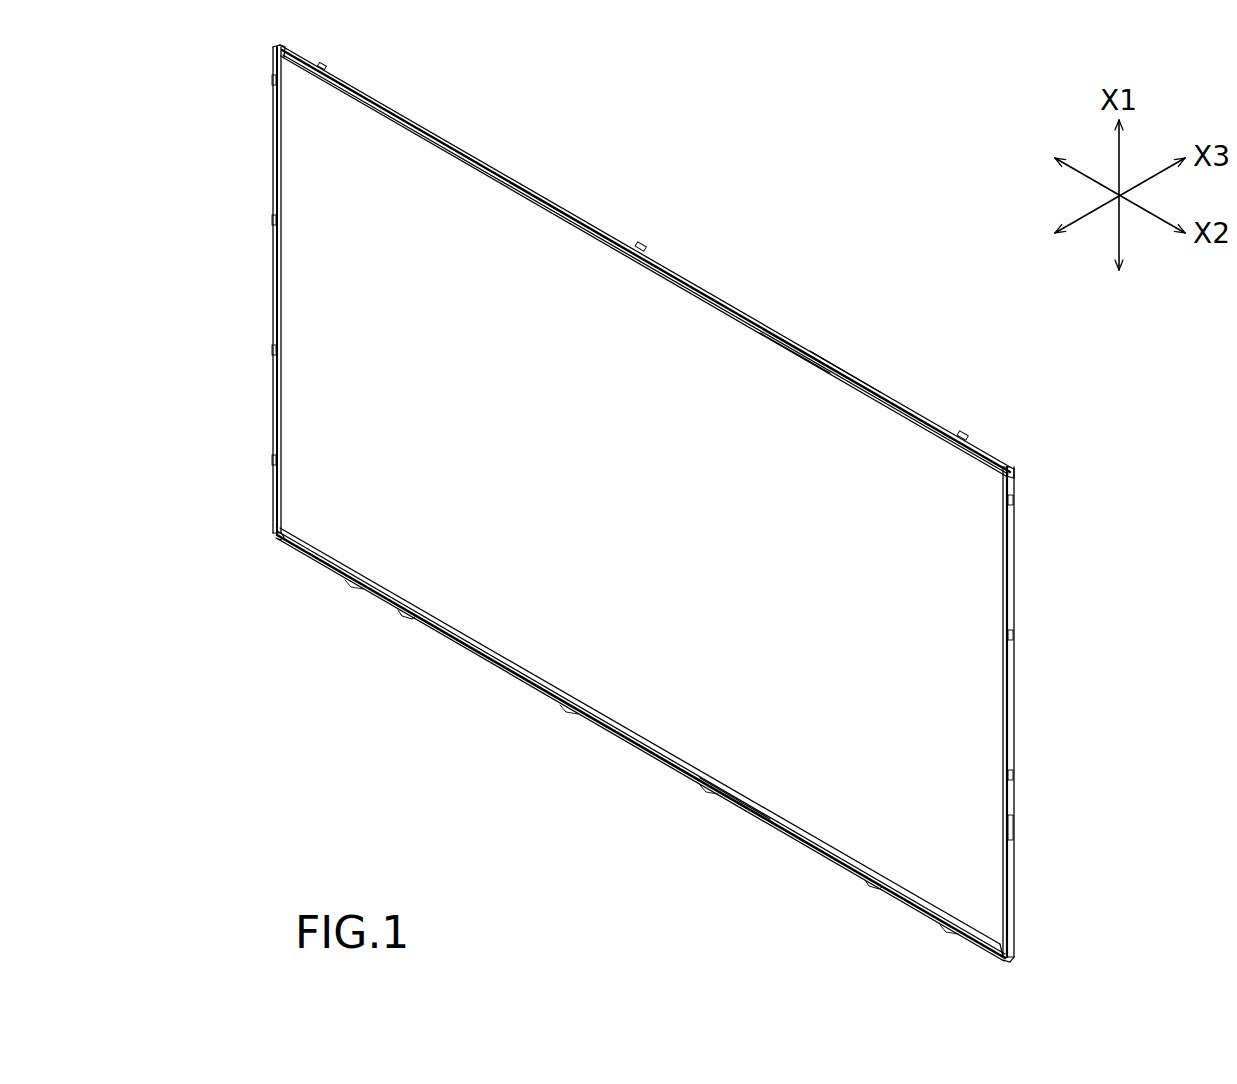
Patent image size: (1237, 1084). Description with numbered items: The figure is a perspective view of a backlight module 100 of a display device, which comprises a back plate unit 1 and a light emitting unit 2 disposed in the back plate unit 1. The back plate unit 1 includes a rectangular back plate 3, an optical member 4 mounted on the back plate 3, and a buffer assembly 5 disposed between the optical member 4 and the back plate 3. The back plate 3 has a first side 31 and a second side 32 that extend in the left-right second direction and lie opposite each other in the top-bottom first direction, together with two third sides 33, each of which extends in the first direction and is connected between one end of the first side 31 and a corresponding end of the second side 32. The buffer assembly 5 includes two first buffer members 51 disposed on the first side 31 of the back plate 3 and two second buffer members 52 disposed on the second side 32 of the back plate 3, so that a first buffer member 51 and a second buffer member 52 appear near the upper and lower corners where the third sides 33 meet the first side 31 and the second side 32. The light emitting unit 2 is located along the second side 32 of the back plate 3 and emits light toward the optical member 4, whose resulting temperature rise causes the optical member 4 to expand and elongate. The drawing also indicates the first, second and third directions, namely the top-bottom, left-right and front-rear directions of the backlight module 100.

The backlight module 100 is at (675, 501).
The back plate unit 1 is at (820, 285).
The light emitting unit 2 is at (732, 799).
The back plate 3 is at (838, 363).
The optical member 4 is at (806, 383).
The first side 31 is at (681, 278).
The second side 32 is at (640, 750).
The third side 33 is at (273, 275).
The buffer assembly 5 is at (1012, 468).
The first buffer member 51 is at (279, 46).
The second buffer member 52 is at (277, 536).